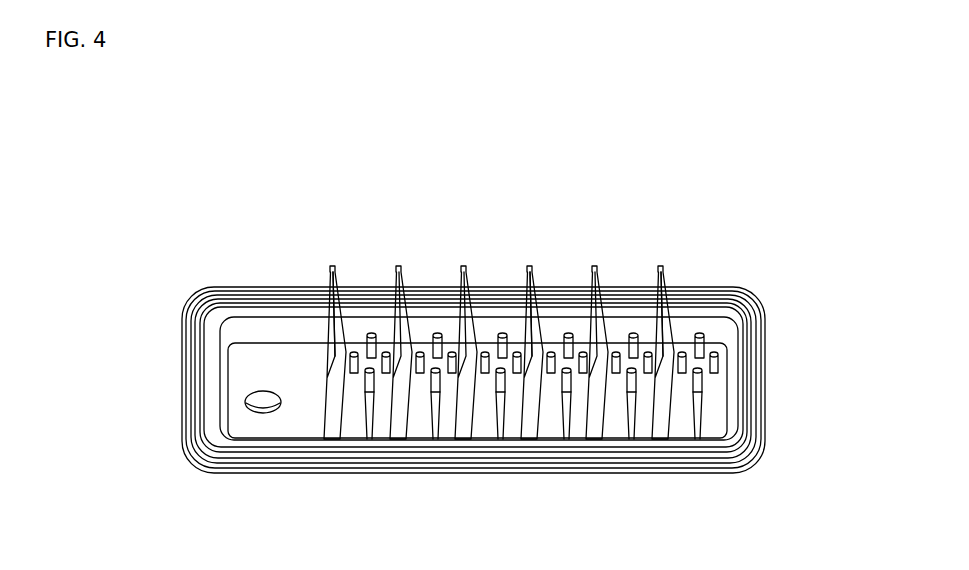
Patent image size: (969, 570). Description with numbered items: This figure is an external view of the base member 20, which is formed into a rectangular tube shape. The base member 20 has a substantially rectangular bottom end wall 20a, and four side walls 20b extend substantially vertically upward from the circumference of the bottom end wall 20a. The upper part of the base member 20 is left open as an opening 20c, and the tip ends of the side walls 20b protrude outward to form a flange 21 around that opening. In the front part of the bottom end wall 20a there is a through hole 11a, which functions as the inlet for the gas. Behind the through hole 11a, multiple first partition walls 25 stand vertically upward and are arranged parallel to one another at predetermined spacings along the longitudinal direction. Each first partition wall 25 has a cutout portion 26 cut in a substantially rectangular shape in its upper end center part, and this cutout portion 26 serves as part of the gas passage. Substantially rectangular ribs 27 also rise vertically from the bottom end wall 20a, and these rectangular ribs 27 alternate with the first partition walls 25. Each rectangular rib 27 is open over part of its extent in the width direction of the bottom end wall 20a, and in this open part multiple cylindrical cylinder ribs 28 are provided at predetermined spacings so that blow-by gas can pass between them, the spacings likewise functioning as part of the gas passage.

The base member 20 is at (238, 222).
The bottom end wall 20a is at (250, 373).
The side walls 20b is at (252, 330).
The opening 20c is at (218, 327).
The flange 21 is at (182, 413).
The through hole 11a is at (262, 417).
The first partition walls 25 is at (466, 268).
The cutout portion 26 is at (333, 318).
The rectangular ribs 27 is at (362, 432).
The cylinder ribs 28 is at (726, 338).